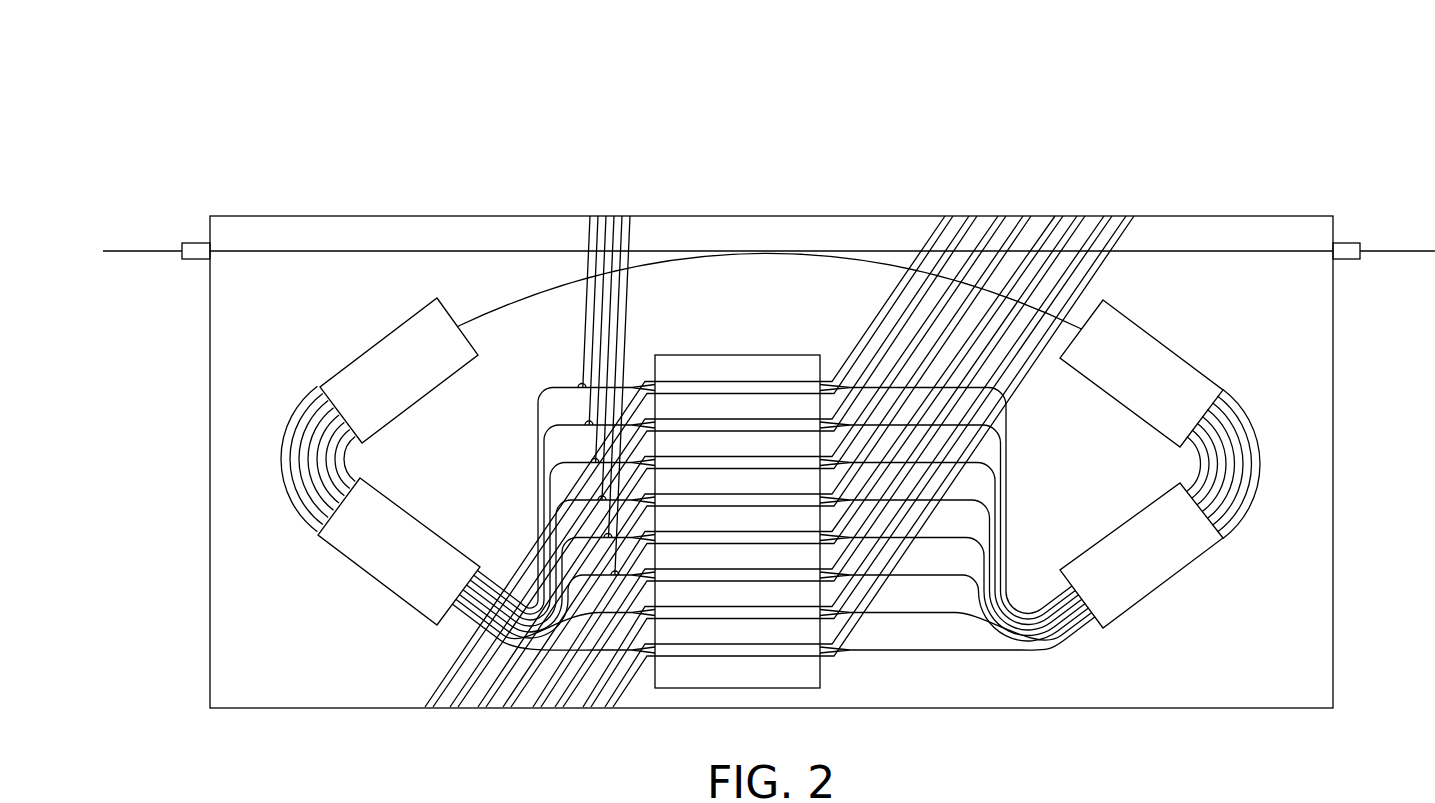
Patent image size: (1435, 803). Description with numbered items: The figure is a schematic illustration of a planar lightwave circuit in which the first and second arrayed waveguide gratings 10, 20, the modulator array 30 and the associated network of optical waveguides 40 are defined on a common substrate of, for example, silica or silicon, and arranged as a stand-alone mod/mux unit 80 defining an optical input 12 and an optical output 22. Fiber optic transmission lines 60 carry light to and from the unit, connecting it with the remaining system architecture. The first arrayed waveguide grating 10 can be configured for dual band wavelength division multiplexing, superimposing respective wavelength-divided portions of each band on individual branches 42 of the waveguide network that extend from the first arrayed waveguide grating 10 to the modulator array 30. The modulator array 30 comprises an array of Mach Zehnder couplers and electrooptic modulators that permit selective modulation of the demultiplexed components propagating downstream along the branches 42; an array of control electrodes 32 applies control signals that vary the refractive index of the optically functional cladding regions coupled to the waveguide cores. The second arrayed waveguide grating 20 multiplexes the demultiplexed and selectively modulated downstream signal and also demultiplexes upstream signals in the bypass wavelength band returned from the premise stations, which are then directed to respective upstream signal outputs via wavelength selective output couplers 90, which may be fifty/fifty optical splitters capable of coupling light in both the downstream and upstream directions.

The mod/mux unit 80 is at (380, 134).
The optical waveguides 40 is at (365, 251).
The fiber optic transmission lines 60 is at (131, 252).
The optical input 12 is at (193, 242).
The optical output 22 is at (1350, 243).
The second arrayed waveguide grating 20 is at (297, 384).
The first arrayed waveguide grating 10 is at (1259, 370).
The modulator array 30 is at (735, 355).
The control electrodes 32 is at (1140, 216).
The individual branches 42 is at (935, 676).
The output couplers 90 is at (560, 362).